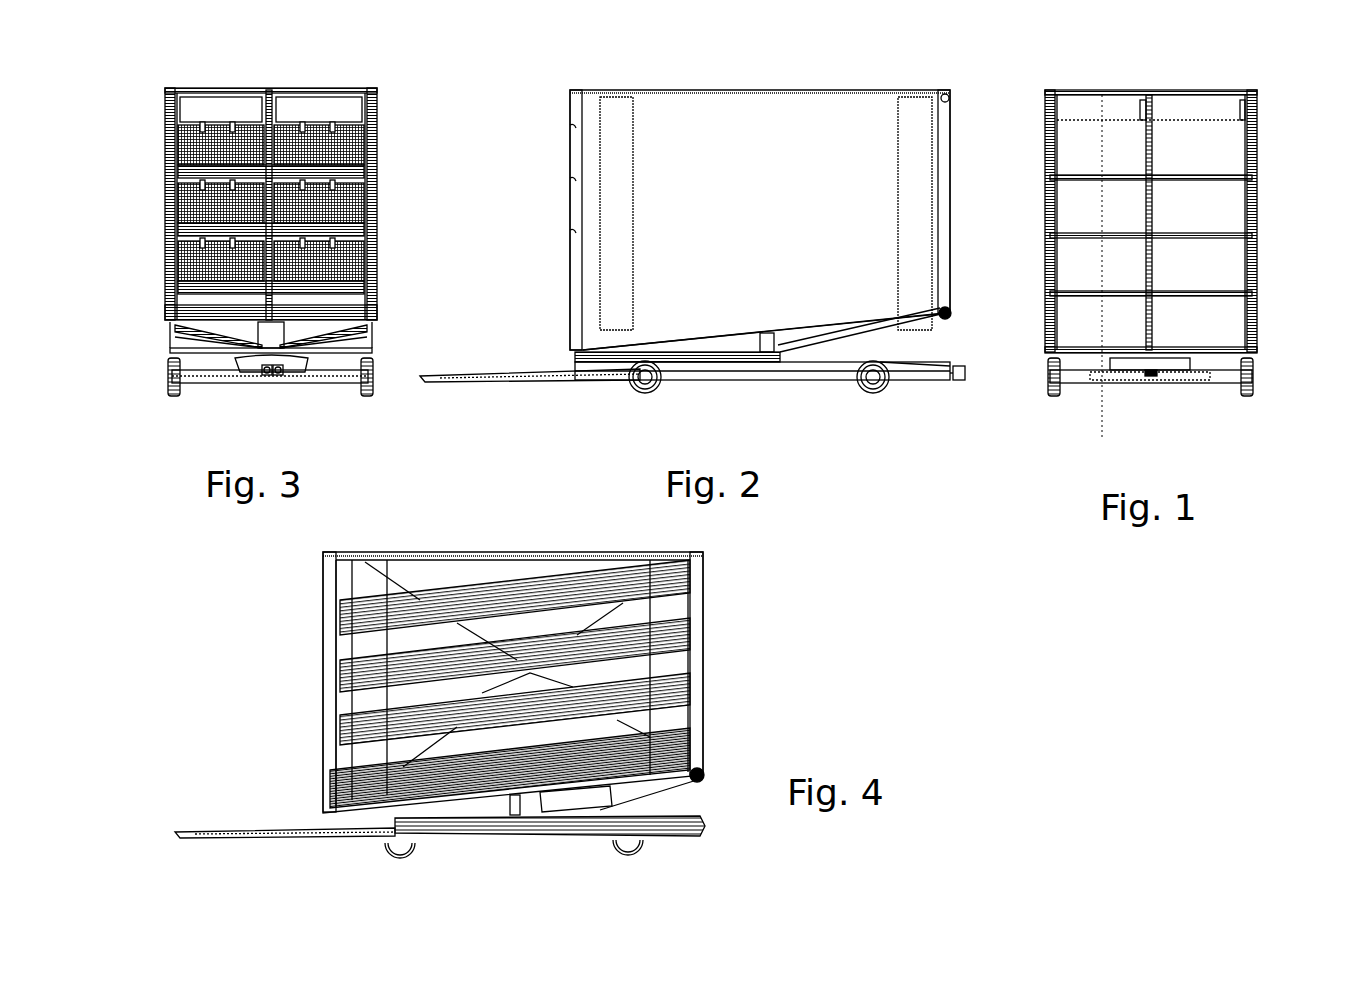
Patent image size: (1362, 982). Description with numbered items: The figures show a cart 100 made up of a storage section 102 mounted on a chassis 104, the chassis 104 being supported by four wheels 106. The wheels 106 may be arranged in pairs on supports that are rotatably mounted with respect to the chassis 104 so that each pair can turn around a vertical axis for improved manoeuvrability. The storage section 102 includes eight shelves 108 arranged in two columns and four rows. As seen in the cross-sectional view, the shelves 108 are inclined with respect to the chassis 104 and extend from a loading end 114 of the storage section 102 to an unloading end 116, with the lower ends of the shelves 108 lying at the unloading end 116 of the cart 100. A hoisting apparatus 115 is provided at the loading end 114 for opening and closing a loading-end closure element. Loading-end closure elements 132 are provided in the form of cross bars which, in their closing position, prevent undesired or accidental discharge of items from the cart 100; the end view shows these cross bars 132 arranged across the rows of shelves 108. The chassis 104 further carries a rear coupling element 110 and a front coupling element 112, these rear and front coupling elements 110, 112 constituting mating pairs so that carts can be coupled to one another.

In FIG. 3, the cart 100 is at (338, 75).
In FIG. 2, the cart 100 is at (742, 71).
In FIG. 1, the cart 100 is at (1112, 73).
In FIG. 4, the cart 100 is at (522, 530).
In FIG. 3, the storage section 102 is at (388, 287).
In FIG. 2, the storage section 102 is at (797, 207).
In FIG. 1, the storage section 102 is at (1207, 132).
In FIG. 4, the storage section 102 is at (433, 580).
In FIG. 3, the chassis 104 is at (342, 385).
In FIG. 2, the chassis 104 is at (818, 382).
In FIG. 1, the chassis 104 is at (1077, 378).
In FIG. 4, the chassis 104 is at (590, 830).
In FIG. 3, the wheels 106 is at (170, 392).
In FIG. 2, the wheels 106 is at (643, 393).
In FIG. 1, the wheels 106 is at (1052, 395).
In FIG. 4, the wheels 106 is at (383, 855).
In FIG. 1, the shelves 108 is at (1082, 172).
In FIG. 4, the shelves 108 is at (372, 625).
In FIG. 2, the rear coupling element 110 is at (530, 378).
In FIG. 1, the rear coupling element 110 is at (1152, 380).
In FIG. 4, the rear coupling element 110 is at (250, 838).
In FIG. 3, the front coupling element 112 is at (268, 378).
In FIG. 2, the front coupling element 112 is at (962, 382).
In FIG. 2, the loading end 114 is at (962, 103).
In FIG. 4, the loading end 114 is at (727, 611).
In FIG. 2, the hoisting apparatus 115 is at (945, 238).
In FIG. 2, the unloading end 116 is at (560, 128).
In FIG. 4, the unloading end 116 is at (303, 558).
In FIG. 3, the loading-end closure elements 132 is at (192, 168).